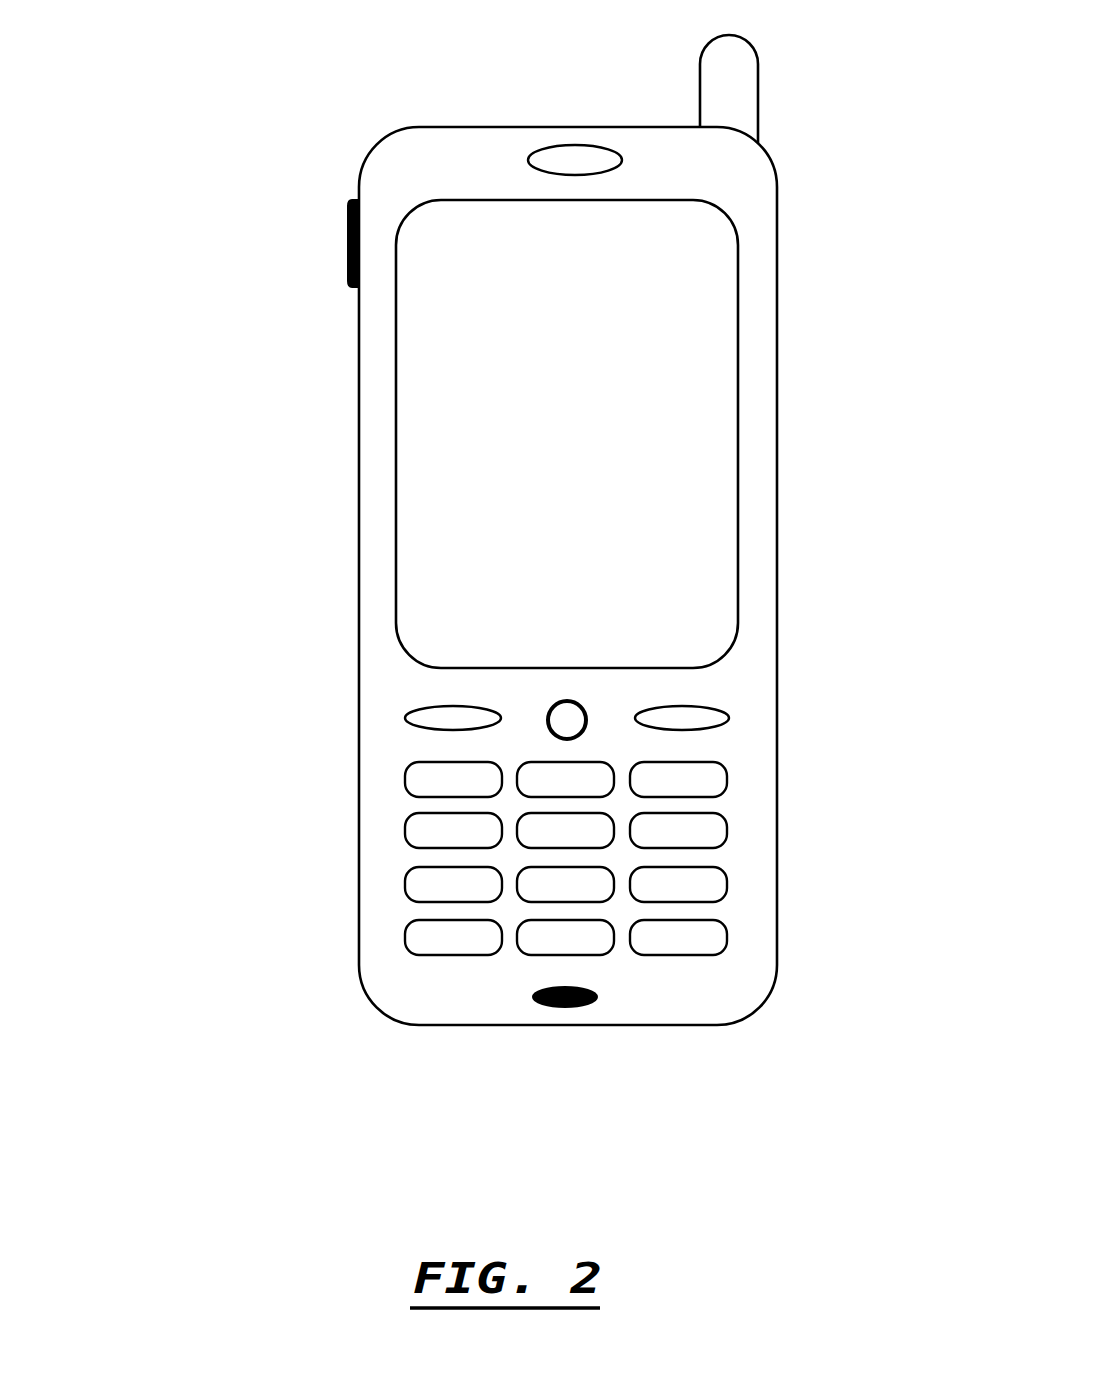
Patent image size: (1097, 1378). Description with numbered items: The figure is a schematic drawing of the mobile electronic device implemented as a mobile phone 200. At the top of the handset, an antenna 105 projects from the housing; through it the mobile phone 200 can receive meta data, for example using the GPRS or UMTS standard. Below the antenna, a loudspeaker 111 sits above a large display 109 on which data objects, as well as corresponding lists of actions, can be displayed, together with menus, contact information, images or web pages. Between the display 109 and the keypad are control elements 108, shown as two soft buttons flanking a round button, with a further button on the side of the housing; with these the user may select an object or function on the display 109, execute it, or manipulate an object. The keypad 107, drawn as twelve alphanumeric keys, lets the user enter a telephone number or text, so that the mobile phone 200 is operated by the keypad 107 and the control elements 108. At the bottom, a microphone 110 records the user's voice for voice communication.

The mobile phone 200 is at (225, 120).
The antenna 105 is at (763, 68).
The loudspeaker 111 is at (557, 148).
The display 109 is at (738, 472).
The control elements 108 is at (348, 245).
The keypad 107 is at (383, 747).
The microphone 110 is at (568, 1007).